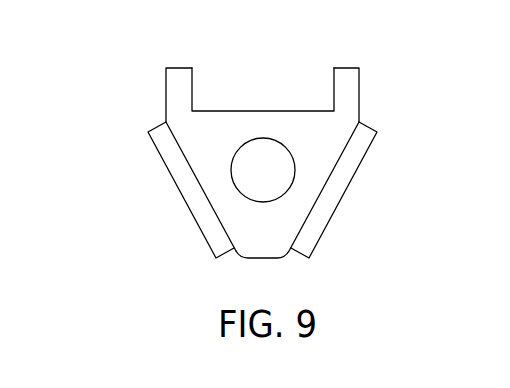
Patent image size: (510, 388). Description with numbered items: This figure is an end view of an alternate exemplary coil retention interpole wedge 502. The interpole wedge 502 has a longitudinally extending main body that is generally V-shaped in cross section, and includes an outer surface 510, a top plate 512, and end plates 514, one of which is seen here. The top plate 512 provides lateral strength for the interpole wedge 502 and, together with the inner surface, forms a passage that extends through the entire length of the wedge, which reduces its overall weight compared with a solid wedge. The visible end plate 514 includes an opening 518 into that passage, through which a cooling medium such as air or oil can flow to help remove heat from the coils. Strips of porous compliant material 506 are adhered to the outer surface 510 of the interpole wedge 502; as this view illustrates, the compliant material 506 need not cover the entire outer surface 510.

The interpole wedge 502 is at (130, 66).
The compliant material 506 is at (186, 192).
The outer surface 510 is at (359, 91).
The top plate 512 is at (233, 111).
The end plate 514 is at (178, 130).
The opening 518 is at (263, 202).